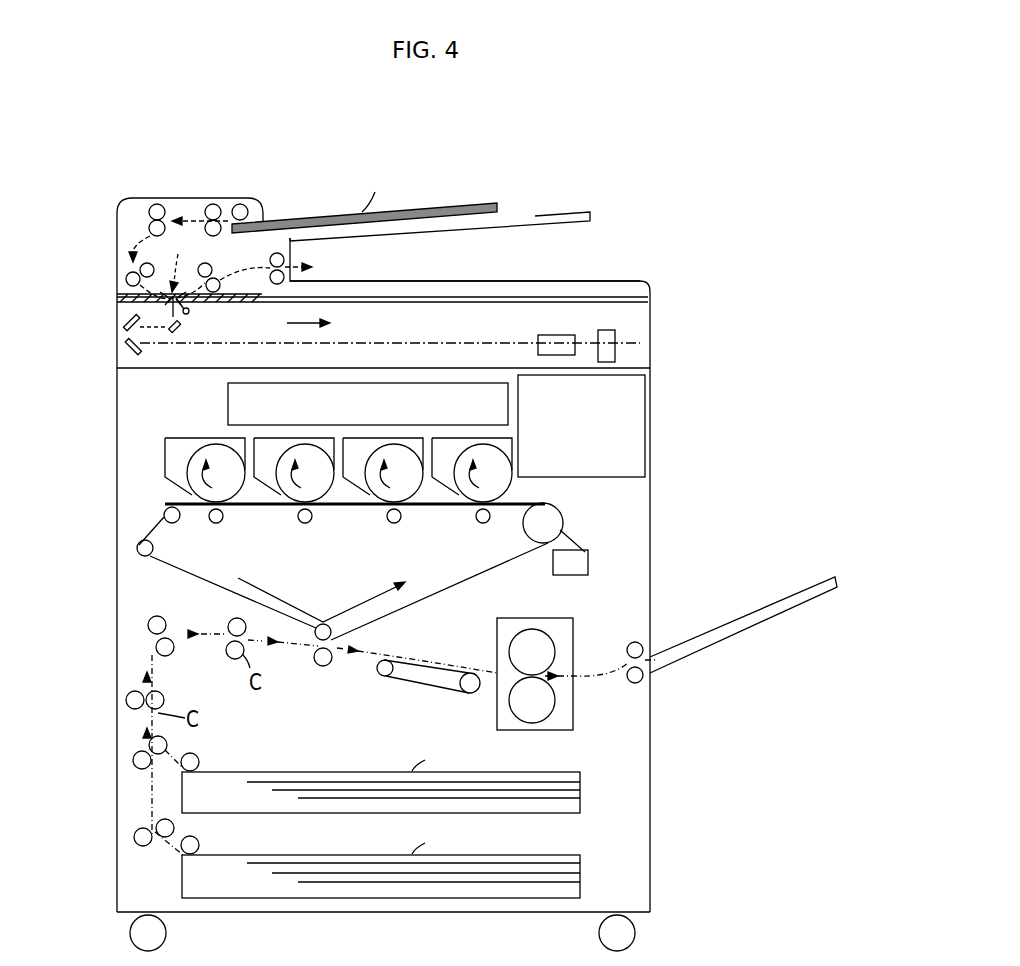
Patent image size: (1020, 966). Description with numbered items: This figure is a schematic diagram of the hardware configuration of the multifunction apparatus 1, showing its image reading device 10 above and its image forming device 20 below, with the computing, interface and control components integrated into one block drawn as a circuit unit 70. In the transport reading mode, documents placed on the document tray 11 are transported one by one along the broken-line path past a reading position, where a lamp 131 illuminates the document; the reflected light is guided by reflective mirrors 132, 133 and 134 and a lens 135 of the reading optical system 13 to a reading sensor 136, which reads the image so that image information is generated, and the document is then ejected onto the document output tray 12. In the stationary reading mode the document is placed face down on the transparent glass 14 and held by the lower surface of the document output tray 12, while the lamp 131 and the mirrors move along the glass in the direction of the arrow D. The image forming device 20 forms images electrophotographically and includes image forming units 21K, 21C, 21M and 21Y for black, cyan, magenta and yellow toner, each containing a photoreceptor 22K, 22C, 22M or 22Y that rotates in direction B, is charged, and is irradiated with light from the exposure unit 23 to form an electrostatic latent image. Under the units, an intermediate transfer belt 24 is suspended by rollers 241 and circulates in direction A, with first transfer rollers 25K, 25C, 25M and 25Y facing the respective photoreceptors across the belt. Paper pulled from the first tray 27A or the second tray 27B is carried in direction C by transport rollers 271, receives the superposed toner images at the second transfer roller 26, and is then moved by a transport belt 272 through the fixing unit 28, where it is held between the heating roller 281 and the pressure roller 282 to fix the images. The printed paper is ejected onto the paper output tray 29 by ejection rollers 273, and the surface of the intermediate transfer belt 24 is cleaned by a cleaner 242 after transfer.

The multifunction apparatus 1 is at (533, 128).
The image reading device 10 is at (590, 190).
The document tray 11 is at (535, 217).
The document output tray 12 is at (515, 284).
The reading optical system 13 is at (585, 318).
The transparent glass 14 is at (585, 297).
The image forming device 20 is at (660, 492).
The image forming unit 21K is at (185, 428).
The image forming unit 21C is at (283, 515).
The image forming unit 21M is at (368, 515).
The image forming unit 21Y is at (458, 515).
The electrophotographic photoreceptor 22K is at (237, 489).
The electrophotographic photoreceptor 22C is at (327, 489).
The electrophotographic photoreceptor 22M is at (416, 489).
The electrophotographic photoreceptor 22Y is at (505, 487).
The exposure unit 23 is at (420, 378).
The intermediate transfer belt 24 is at (468, 585).
The first transfer roller 25K is at (216, 523).
The first transfer roller 25C is at (305, 523).
The first transfer roller 25M is at (394, 523).
The first transfer roller 25Y is at (483, 523).
The second transfer roller 26 is at (323, 667).
The first tray 27A is at (583, 873).
The second tray 27B is at (583, 790).
The fixing unit 28 is at (582, 610).
The paper output tray 29 is at (760, 608).
The circuit unit 70 is at (650, 402).
The lamp 131 is at (190, 312).
The reflective mirror 132 is at (180, 330).
The reflective mirror 133 is at (125, 318).
The reflective mirror 134 is at (125, 355).
The lens 135 is at (540, 338).
The reading sensor 136 is at (616, 336).
The rollers 241 is at (167, 506).
The cleaner 242 is at (585, 550).
The transport rollers 271 is at (160, 622).
The transport belt 272 is at (395, 683).
The ejection rollers 273 is at (640, 648).
The heating roller 281 is at (542, 646).
The pressure roller 282 is at (550, 700).